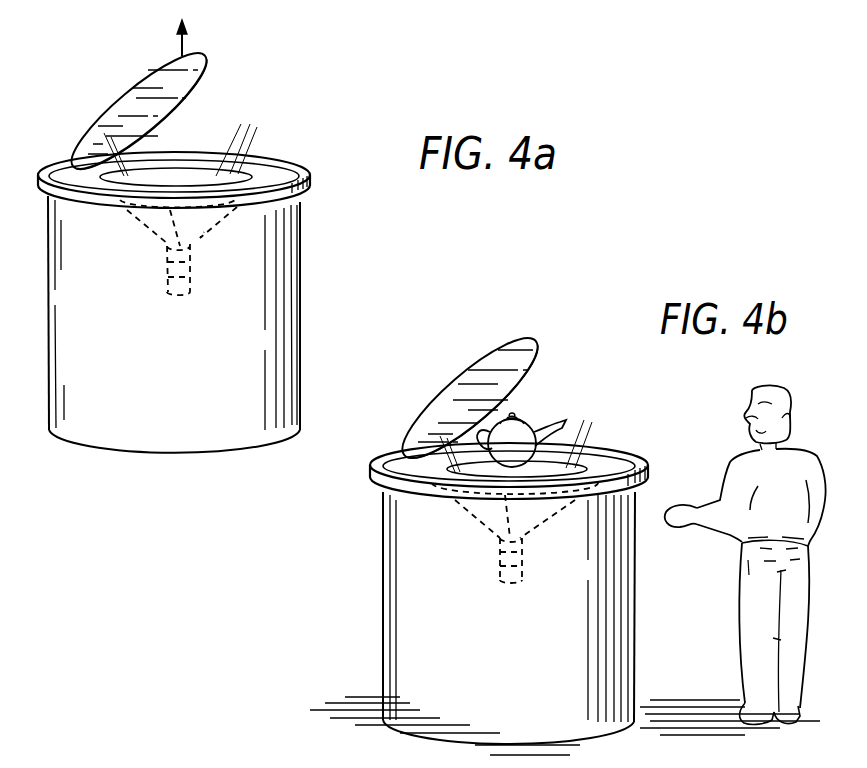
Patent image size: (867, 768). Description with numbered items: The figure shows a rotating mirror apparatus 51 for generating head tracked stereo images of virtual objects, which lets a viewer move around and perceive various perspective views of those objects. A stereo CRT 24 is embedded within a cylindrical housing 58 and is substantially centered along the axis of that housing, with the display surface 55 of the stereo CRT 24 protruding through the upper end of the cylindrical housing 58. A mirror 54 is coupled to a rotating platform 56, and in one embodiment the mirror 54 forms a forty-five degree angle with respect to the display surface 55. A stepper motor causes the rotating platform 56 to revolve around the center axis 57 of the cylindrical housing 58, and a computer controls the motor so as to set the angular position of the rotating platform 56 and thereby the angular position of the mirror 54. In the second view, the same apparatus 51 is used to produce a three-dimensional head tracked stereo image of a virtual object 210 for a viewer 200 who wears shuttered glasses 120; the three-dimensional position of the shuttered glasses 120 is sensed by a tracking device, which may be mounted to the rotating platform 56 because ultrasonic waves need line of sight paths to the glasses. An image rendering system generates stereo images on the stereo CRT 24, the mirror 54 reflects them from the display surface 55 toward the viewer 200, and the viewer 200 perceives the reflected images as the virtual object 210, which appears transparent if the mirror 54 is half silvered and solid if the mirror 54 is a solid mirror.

In FIG. 4A, the rotating mirror apparatus 51 is at (306, 124).
In FIG. 4B, the rotating mirror apparatus 51 is at (324, 552).
In FIG. 4A, the mirror 54 is at (193, 88).
In FIG. 4B, the mirror 54 is at (545, 360).
In FIG. 4A, the display surface 55 is at (178, 151).
In FIG. 4A, the rotating platform 56 is at (306, 168).
In FIG. 4B, the rotating platform 56 is at (391, 464).
In FIG. 4A, the center axis 57 is at (183, 50).
In FIG. 4A, the cylindrical housing 58 is at (299, 315).
In FIG. 4B, the cylindrical housing 58 is at (394, 604).
In FIG. 4A, the stereo CRT 24 is at (203, 234).
In FIG. 4B, the stereo CRT 24 is at (474, 540).
In FIG. 4B, the virtual object 210 is at (538, 416).
In FIG. 4B, the viewer 200 is at (790, 415).
In FIG. 4B, the shuttered glasses 120 is at (744, 412).